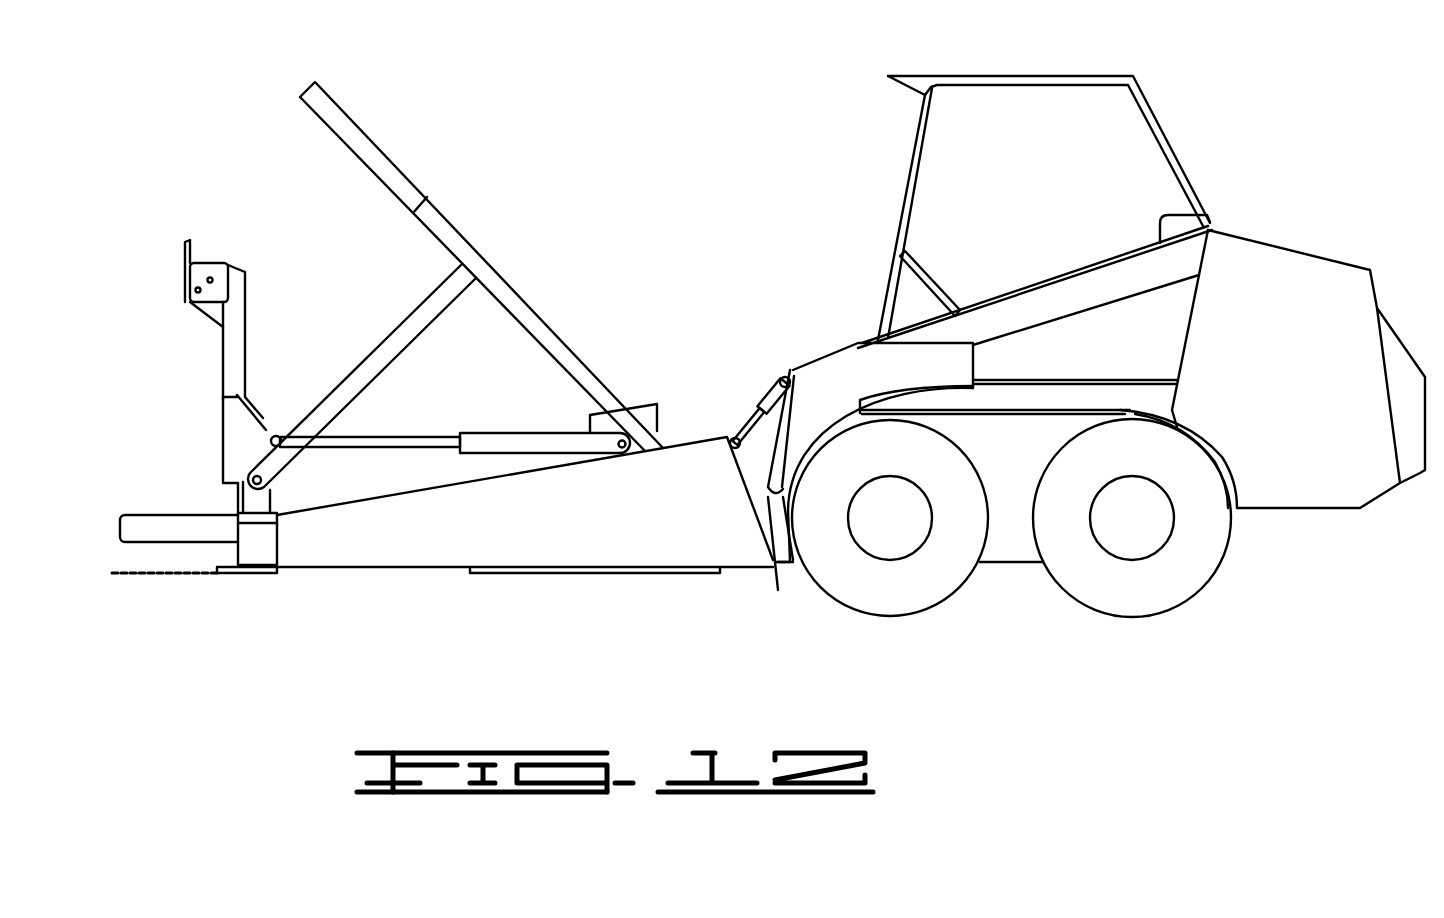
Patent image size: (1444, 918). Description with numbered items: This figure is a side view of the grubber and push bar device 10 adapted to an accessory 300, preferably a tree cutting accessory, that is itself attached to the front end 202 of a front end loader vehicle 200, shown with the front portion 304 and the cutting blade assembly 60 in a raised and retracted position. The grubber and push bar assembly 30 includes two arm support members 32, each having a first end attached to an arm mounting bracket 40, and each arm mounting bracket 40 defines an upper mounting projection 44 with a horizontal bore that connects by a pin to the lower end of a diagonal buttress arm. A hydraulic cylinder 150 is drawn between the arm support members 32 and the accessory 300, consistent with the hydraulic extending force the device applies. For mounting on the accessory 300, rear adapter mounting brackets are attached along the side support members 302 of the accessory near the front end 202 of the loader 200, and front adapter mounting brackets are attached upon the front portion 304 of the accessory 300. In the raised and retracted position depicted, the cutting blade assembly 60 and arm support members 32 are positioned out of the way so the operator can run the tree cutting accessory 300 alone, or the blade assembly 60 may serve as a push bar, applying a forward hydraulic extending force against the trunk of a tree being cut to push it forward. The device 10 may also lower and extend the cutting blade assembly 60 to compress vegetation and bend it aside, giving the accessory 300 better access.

The grubber and push bar device 10 is at (240, 280).
The grubber and push bar assembly 30 is at (245, 350).
The arm support member 32 is at (223, 363).
The arm mounting bracket 40 is at (237, 420).
The upper mounting projection 44 is at (266, 428).
The cutting blade assembly 60 is at (215, 270).
The hydraulic cylinder 150 is at (473, 435).
The front end loader vehicle 200 is at (1172, 270).
The front end 202 is at (770, 553).
The accessory 300 is at (505, 537).
The side support member 302 is at (690, 437).
The front portion 304 is at (270, 543).